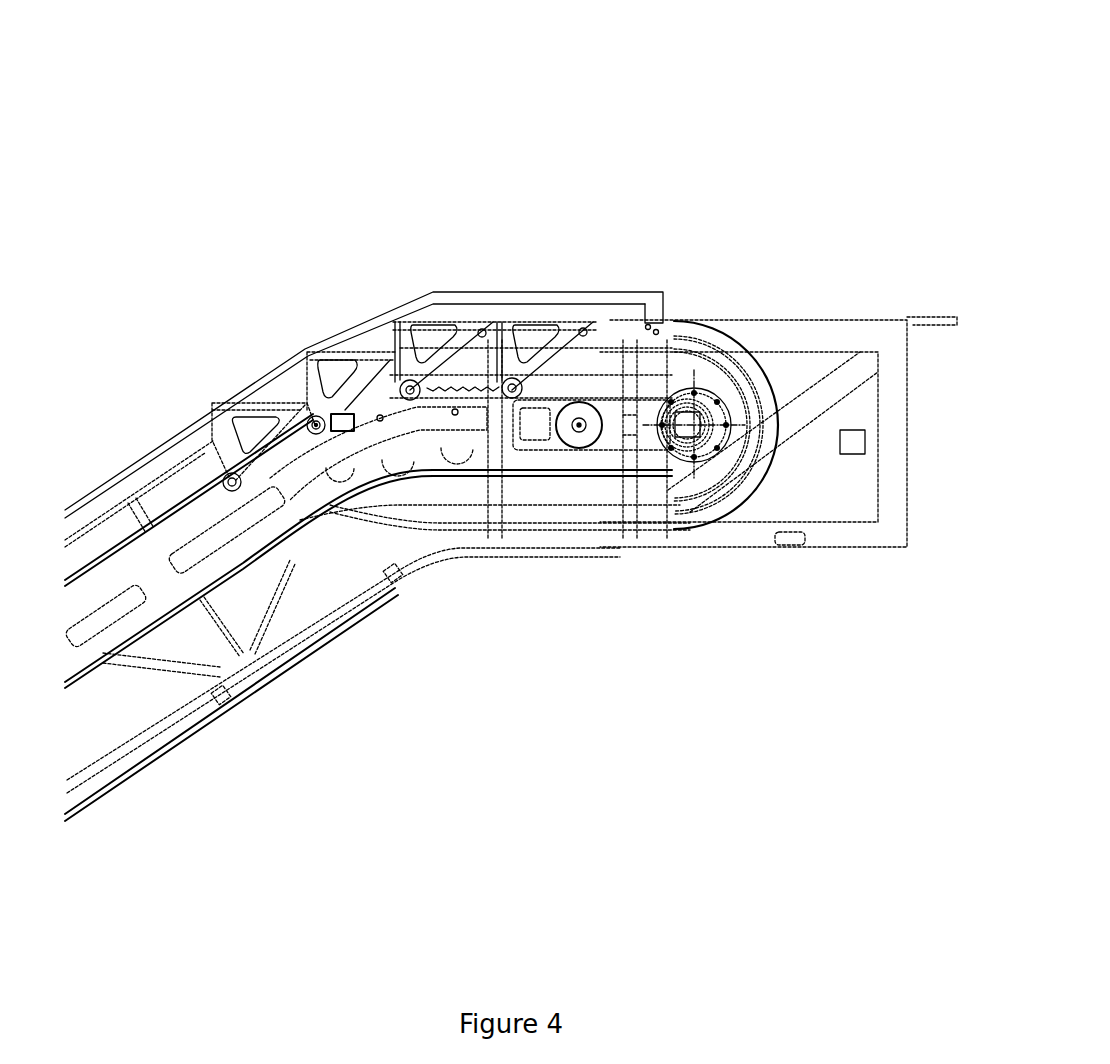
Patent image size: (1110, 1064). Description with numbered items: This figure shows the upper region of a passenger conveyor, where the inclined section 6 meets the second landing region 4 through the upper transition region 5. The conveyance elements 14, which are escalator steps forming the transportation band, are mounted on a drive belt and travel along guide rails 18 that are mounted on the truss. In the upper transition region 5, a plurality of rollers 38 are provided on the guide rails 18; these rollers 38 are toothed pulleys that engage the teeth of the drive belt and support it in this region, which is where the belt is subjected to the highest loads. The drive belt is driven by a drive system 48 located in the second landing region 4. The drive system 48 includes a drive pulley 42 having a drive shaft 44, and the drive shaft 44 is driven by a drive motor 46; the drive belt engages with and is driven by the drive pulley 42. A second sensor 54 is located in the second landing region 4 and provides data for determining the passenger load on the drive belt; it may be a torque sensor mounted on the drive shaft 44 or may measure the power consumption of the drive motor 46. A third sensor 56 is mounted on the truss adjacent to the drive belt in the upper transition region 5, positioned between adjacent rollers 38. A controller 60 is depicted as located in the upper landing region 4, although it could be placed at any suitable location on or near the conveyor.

The second landing region 4 is at (511, 262).
The upper transition region 5 is at (328, 307).
The inclined section 6 is at (137, 424).
The conveyance element 14 is at (247, 397).
The guide rail 18 is at (170, 522).
The roller 38 is at (340, 470).
The drive pulley 42 is at (707, 385).
The drive shaft 44 is at (707, 413).
The drive motor 46 is at (585, 390).
The drive system 48 is at (953, 105).
The second sensor 54 is at (686, 436).
The third sensor 56 is at (322, 447).
The controller 60 is at (852, 457).